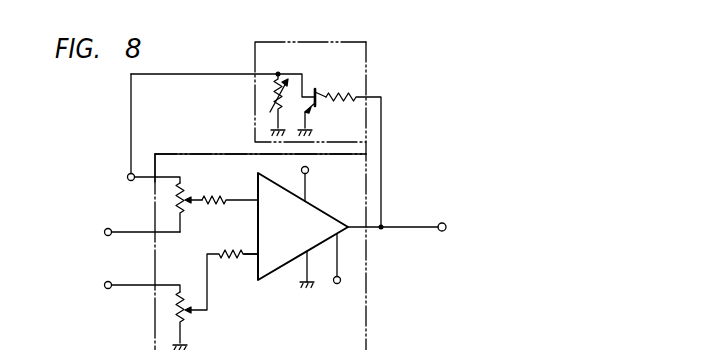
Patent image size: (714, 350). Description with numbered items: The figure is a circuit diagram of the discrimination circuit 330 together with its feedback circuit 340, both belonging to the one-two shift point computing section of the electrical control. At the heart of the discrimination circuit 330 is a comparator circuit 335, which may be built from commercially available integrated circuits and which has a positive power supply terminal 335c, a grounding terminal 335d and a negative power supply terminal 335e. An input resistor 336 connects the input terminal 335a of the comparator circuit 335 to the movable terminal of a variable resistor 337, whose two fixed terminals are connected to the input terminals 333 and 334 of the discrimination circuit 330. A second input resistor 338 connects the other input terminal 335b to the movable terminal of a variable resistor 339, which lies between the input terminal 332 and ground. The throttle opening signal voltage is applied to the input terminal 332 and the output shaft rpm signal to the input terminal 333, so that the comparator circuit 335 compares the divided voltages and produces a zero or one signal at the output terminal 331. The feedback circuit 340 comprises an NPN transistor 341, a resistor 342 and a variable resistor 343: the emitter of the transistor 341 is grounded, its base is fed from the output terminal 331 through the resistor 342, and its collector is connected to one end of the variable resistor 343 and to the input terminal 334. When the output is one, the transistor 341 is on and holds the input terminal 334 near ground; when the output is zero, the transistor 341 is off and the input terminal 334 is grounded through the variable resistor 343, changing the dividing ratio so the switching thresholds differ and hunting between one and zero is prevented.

The discrimination circuit 330 is at (368, 307).
The output terminal 331 is at (446, 229).
The input terminal 332 is at (106, 290).
The input terminal 333 is at (105, 237).
The input terminal 334 is at (130, 153).
The comparator circuit 335 is at (350, 220).
The input terminal 335a is at (246, 201).
The input terminal 335b is at (247, 256).
The positive power supply terminal 335c is at (306, 193).
The grounding terminal 335d is at (302, 283).
The negative power supply terminal 335e is at (338, 265).
The input resistor 336 is at (199, 196).
The variable resistor 337 is at (182, 208).
The input resistor 338 is at (227, 252).
The variable resistor 339 is at (175, 326).
The feedback circuit 340 is at (367, 43).
The NPN transistor 341 is at (308, 87).
The resistor 342 is at (361, 96).
The variable resistor 343 is at (268, 96).